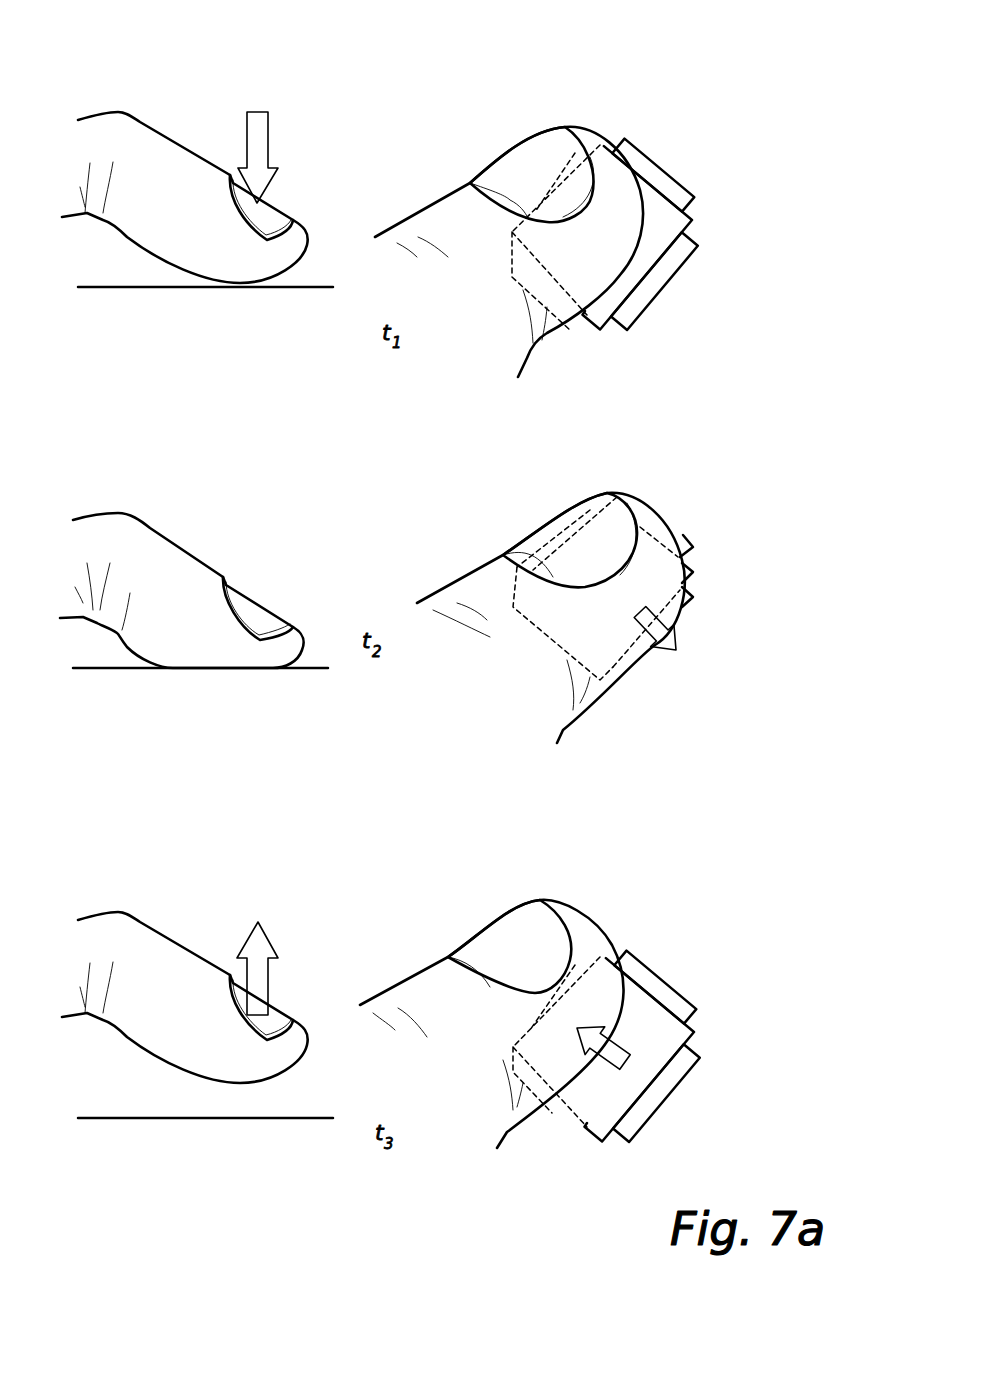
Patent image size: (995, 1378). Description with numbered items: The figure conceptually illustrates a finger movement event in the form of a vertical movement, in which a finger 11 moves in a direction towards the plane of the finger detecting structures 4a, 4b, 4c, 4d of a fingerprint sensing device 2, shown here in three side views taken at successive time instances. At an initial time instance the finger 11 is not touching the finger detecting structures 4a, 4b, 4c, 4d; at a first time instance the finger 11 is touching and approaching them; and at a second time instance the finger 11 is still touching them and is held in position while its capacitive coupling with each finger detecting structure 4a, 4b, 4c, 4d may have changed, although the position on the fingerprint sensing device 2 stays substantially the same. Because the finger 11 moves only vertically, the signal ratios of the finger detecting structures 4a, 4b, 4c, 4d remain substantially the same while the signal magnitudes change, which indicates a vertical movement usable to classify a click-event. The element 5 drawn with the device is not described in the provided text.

The finger 11 is at (372, 585).
The fingerprint sensing device 2 is at (644, 647).
The housing 5 is at (704, 643).
The finger detecting structure 4a is at (689, 665).
The finger detecting structure 4b is at (686, 533).
The finger detecting structure 4c is at (529, 573).
The finger detecting structure 4d is at (583, 744).